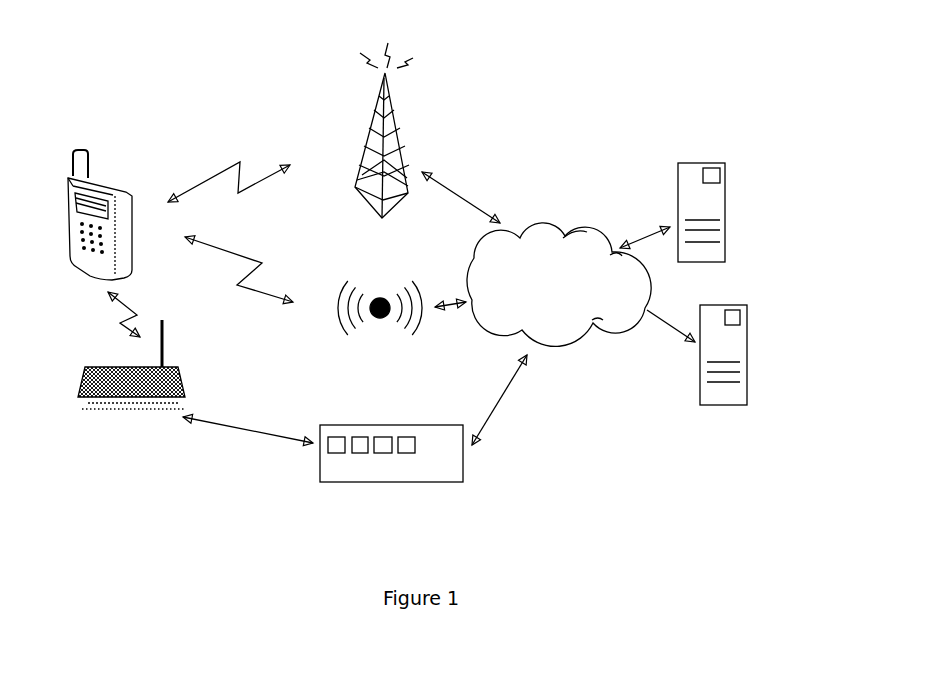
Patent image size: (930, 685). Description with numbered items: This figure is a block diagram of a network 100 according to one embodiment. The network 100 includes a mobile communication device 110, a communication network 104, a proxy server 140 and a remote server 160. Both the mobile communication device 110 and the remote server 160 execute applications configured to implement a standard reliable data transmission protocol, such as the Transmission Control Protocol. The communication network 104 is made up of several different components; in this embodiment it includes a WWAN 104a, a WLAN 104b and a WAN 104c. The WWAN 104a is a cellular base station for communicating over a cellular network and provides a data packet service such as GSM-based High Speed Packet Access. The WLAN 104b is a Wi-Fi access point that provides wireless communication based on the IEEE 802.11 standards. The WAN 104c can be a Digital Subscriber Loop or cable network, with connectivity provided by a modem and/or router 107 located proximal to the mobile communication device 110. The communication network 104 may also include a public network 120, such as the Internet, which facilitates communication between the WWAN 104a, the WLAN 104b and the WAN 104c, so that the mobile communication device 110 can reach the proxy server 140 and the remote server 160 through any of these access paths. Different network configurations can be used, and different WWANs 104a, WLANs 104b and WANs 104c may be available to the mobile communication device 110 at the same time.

The network 100 is at (767, 39).
The communication network 104 is at (519, 90).
The WWAN 104a is at (368, 128).
The WLAN 104b is at (350, 282).
The WAN 104c is at (377, 465).
The modem and/or router 107 is at (131, 410).
The mobile communication device 110 is at (86, 193).
The public network 120 is at (565, 222).
The proxy server 140 is at (688, 175).
The remote server 160 is at (735, 395).